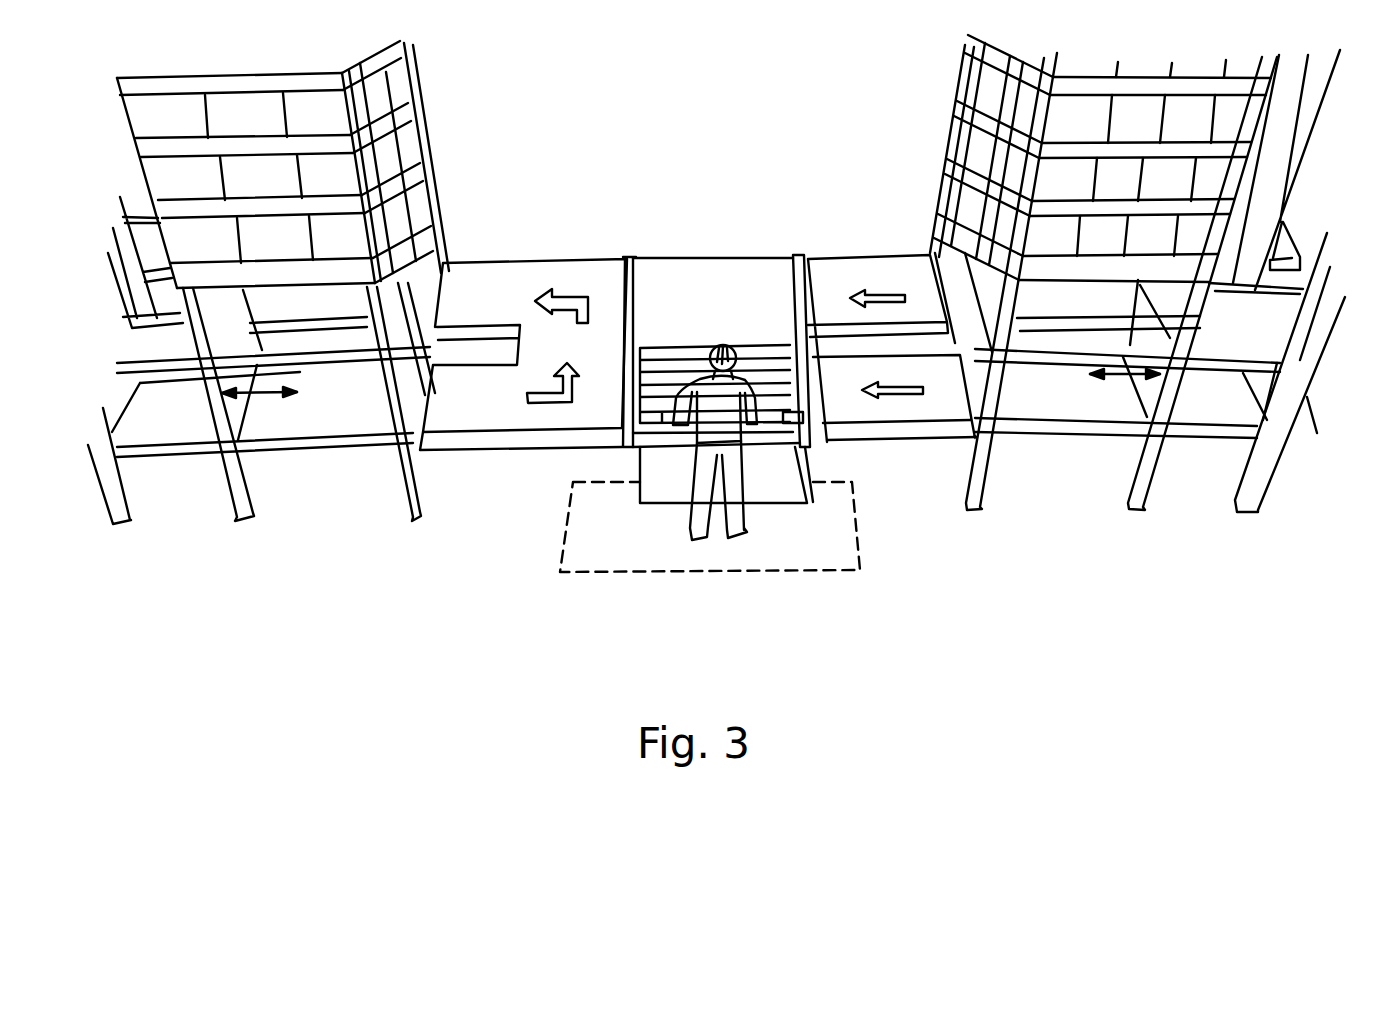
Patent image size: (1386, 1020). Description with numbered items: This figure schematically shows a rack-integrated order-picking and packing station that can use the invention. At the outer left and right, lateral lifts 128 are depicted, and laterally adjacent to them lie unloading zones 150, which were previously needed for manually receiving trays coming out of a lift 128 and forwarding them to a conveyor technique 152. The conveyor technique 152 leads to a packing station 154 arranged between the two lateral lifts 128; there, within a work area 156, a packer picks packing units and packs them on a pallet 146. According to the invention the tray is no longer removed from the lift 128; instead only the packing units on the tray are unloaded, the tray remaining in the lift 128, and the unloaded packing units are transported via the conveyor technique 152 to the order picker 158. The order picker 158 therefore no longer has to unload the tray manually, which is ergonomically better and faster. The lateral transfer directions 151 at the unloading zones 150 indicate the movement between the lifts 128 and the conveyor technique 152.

The lateral lift 128 is at (163, 490).
The unloading zone 150 is at (318, 415).
The lateral transfer direction 151 is at (255, 395).
The conveyor technique 152 is at (492, 257).
The packing station 154 is at (712, 193).
The pallet 146 is at (662, 347).
The work area 156 is at (843, 523).
The order picker 158 is at (740, 537).